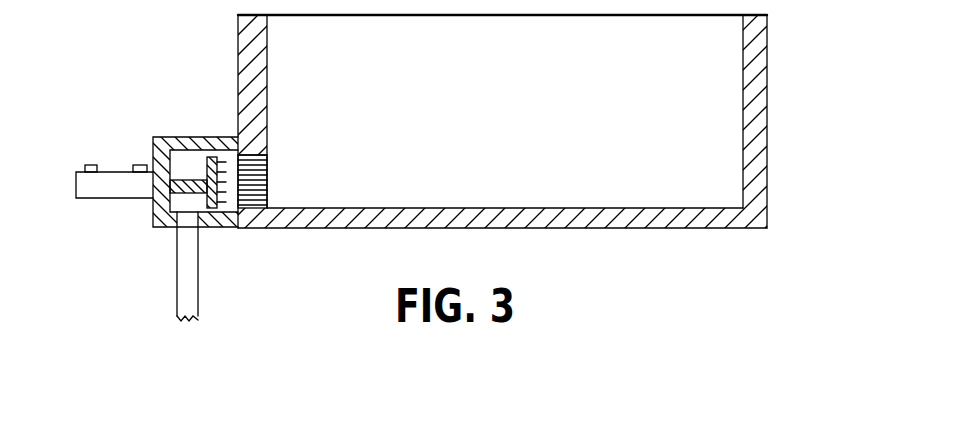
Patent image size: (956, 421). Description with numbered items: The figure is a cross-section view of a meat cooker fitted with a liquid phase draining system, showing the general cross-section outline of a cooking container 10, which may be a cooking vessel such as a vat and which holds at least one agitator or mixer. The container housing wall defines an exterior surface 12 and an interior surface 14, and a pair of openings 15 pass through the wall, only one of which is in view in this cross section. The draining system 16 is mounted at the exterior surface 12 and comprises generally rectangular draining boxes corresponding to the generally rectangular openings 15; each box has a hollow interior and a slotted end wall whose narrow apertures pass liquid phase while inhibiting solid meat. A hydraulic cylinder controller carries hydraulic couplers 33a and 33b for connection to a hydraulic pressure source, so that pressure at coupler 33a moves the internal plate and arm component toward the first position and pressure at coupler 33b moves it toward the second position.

The cooking container 10 is at (722, 95).
The exterior surface 12 is at (238, 60).
The interior surface 14 is at (267, 68).
The opening 15 is at (267, 183).
The draining system 16 is at (132, 256).
The hydraulic coupler 33a is at (137, 165).
The hydraulic coupler 33b is at (88, 165).